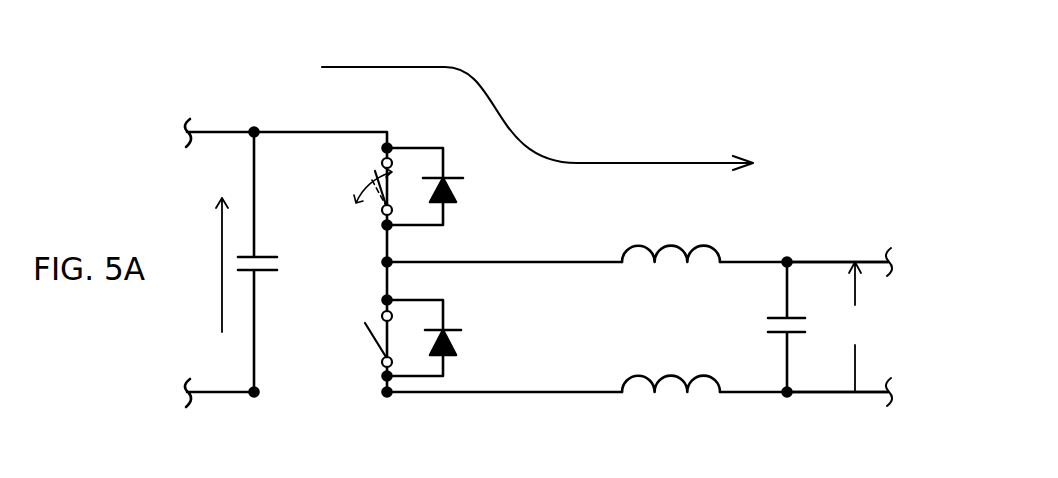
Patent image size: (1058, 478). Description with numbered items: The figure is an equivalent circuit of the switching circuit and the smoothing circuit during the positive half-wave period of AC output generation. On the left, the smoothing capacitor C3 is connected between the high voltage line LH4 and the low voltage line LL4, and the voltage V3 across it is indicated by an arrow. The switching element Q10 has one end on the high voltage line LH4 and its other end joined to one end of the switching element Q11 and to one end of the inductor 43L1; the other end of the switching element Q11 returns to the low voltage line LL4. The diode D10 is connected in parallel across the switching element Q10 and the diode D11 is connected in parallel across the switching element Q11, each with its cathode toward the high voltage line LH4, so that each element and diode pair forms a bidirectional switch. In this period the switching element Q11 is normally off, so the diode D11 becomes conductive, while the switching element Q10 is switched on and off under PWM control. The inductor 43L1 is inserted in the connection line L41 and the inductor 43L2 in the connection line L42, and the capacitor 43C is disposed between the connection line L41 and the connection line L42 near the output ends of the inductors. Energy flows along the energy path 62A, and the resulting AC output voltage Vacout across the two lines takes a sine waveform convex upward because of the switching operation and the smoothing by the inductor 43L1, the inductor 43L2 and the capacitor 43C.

The energy path 62A is at (415, 67).
The high voltage line LH4 is at (220, 132).
The low voltage line LL4 is at (223, 393).
The capacitor C3 is at (258, 256).
The voltage across capacitor C3 V3 is at (207, 265).
The switching element Q10 is at (359, 168).
The diode D10 is at (460, 178).
The switching element Q11 is at (358, 349).
The diode D11 is at (460, 331).
The inductor 43L1 is at (669, 243).
The inductor 43L2 is at (669, 374).
The capacitor 43C is at (777, 317).
The connection line L41 is at (823, 260).
The connection line L42 is at (829, 394).
The AC output voltage Vacout is at (871, 327).